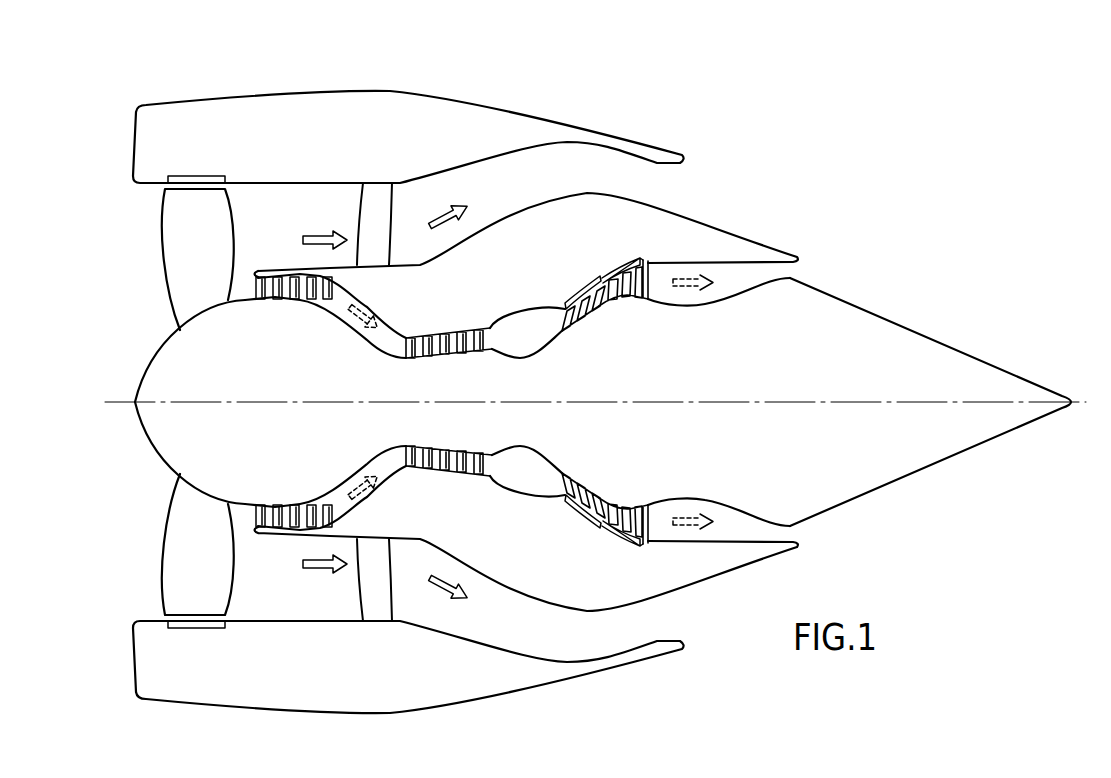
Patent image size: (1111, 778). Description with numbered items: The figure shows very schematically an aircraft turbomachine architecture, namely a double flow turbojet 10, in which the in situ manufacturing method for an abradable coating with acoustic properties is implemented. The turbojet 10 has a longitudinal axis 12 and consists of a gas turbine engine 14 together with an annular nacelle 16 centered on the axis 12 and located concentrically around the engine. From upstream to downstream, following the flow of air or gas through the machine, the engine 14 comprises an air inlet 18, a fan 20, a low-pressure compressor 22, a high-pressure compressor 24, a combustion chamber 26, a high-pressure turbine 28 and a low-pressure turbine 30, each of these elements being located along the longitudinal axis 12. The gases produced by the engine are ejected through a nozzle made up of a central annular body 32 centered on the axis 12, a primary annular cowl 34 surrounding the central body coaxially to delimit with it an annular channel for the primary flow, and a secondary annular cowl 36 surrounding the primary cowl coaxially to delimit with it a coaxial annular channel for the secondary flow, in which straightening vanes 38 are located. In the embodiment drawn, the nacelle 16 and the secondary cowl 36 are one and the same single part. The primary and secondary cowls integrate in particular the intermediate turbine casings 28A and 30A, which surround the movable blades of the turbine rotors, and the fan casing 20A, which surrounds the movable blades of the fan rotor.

The double flow turbojet 10 is at (840, 150).
The longitudinal axis 12 is at (110, 401).
The gas turbine engine 14 is at (148, 452).
The annular nacelle 16 is at (217, 93).
The air inlet 18 is at (137, 300).
The fan 20 is at (182, 231).
The fan casing 20A is at (200, 176).
The low-pressure compressor 22 is at (296, 499).
The high-pressure compressor 24 is at (451, 448).
The combustion chamber 26 is at (534, 478).
The high-pressure turbine 28 is at (582, 472).
The intermediate turbine casing 28A is at (582, 515).
The low-pressure turbine 30 is at (626, 498).
The intermediate turbine casing 30A is at (612, 537).
The central annular body 32 is at (910, 342).
The primary annular cowl 34 is at (702, 225).
The secondary annular cowl 36 is at (366, 108).
The straightening vanes 38 is at (366, 205).